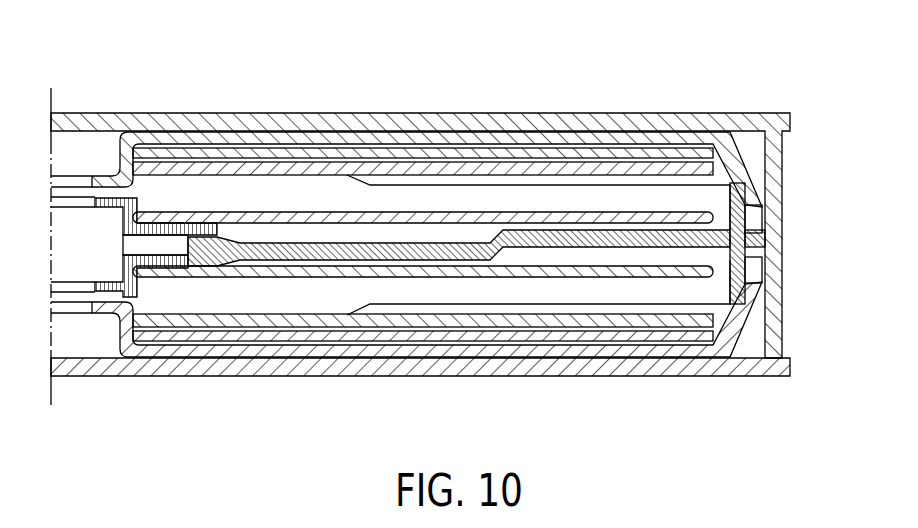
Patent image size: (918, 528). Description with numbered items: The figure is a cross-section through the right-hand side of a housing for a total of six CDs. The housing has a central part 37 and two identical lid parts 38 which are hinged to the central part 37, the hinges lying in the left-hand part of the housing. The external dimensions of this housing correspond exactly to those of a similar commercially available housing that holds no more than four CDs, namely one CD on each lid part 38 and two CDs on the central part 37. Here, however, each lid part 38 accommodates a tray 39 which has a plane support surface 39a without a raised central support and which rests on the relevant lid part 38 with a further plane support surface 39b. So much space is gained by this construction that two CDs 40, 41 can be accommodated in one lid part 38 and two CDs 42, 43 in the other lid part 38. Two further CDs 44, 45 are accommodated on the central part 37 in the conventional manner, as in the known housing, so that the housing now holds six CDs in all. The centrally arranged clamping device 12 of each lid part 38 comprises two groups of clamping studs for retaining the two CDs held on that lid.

The clamping device 12 is at (83, 153).
The central part 37 is at (773, 248).
The lid part 38 is at (672, 122).
The tray 39 is at (395, 133).
The plane support surface 39a is at (440, 143).
The plane support surface 39b is at (508, 133).
The CD 40 is at (437, 337).
The CD 41 is at (513, 320).
The CD 42 is at (258, 152).
The CD 43 is at (323, 163).
The CD 44 is at (640, 305).
The CD 45 is at (577, 215).